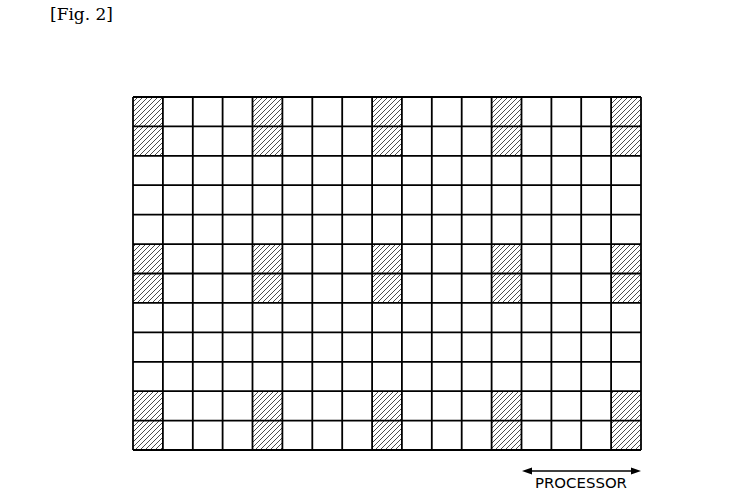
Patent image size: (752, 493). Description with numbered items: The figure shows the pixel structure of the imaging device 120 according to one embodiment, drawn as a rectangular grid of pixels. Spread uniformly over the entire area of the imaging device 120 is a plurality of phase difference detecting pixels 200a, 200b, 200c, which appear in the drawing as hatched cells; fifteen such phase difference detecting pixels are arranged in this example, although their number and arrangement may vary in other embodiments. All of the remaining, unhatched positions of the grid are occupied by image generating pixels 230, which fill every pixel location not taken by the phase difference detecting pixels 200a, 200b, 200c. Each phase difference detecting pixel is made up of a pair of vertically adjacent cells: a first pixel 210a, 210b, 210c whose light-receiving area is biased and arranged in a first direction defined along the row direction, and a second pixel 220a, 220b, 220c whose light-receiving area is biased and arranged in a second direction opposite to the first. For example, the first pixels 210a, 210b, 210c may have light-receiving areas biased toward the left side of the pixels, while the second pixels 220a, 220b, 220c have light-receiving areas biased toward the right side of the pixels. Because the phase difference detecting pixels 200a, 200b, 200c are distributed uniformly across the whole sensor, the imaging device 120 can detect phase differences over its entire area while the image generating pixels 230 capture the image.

The imaging device 120 is at (450, 46).
The image generating pixels 230 is at (596, 108).
The phase difference detecting pixel 200a is at (345, 273).
The phase difference detecting pixel 200b is at (226, 273).
The phase difference detecting pixel 200c is at (106, 273).
The first pixel 210a is at (373, 258).
The first pixel 210b is at (254, 258).
The first pixel 210c is at (134, 258).
The second pixel 220a is at (381, 287).
The second pixel 220b is at (262, 287).
The second pixel 220c is at (141, 287).